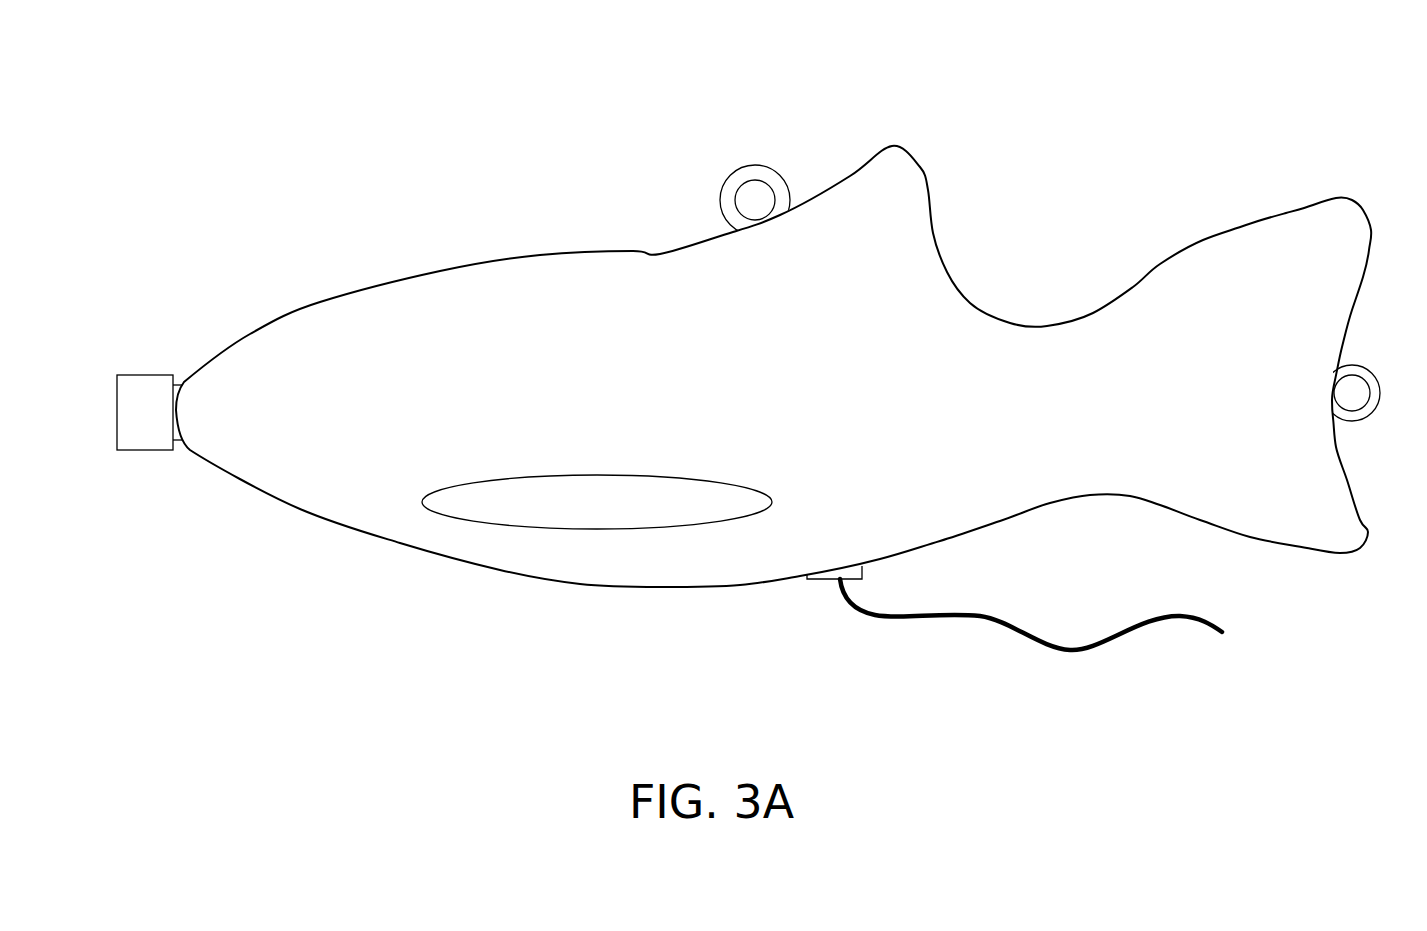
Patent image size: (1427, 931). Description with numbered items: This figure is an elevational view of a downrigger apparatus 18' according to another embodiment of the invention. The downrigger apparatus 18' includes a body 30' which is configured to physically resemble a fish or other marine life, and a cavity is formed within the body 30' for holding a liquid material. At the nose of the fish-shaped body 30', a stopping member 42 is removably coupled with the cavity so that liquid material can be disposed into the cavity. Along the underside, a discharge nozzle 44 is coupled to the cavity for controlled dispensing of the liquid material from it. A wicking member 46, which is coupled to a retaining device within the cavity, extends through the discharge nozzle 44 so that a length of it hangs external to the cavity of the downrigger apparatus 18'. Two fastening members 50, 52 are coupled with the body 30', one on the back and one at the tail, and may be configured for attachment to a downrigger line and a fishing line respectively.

The downrigger apparatus 18' is at (339, 81).
The body 30' is at (773, 361).
The stopping member 42 is at (137, 375).
The discharge nozzle 44 is at (820, 579).
The wicking member 46 is at (963, 618).
The fastening member 50 is at (747, 165).
The fastening member 52 is at (1366, 357).